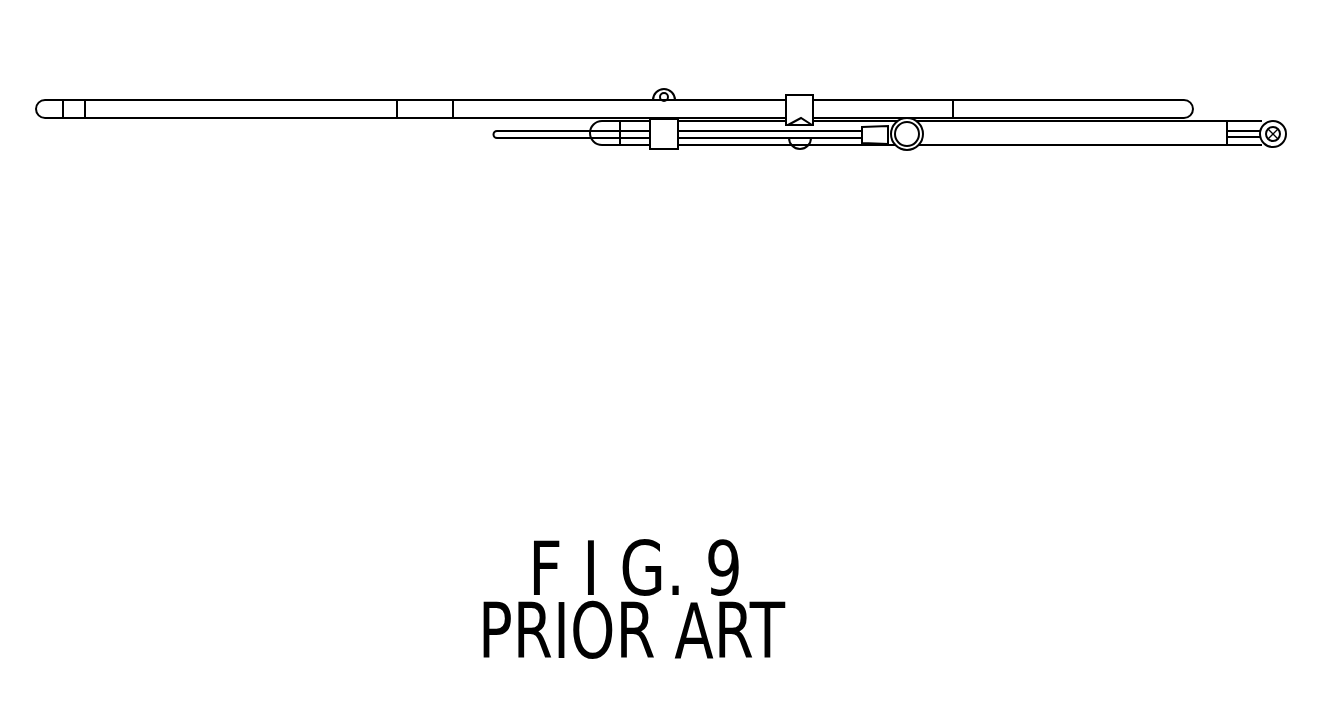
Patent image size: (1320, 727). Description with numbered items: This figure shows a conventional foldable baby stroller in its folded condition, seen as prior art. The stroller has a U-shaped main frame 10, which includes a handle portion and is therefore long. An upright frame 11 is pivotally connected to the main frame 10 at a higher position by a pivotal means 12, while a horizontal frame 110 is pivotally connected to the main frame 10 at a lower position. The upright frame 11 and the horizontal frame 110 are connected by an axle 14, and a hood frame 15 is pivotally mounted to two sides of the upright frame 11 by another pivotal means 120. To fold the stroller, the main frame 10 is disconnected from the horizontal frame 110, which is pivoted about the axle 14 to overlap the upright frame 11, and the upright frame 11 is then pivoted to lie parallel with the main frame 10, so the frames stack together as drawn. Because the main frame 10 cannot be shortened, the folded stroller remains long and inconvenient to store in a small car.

The main frame 10 is at (507, 100).
The upright frame 11 is at (1115, 141).
The axle 14 is at (1280, 121).
The horizontal frame 110 is at (623, 147).
The hood frame 15 is at (707, 130).
The pivotal means 12 is at (793, 148).
The pivotal means 120 is at (905, 138).